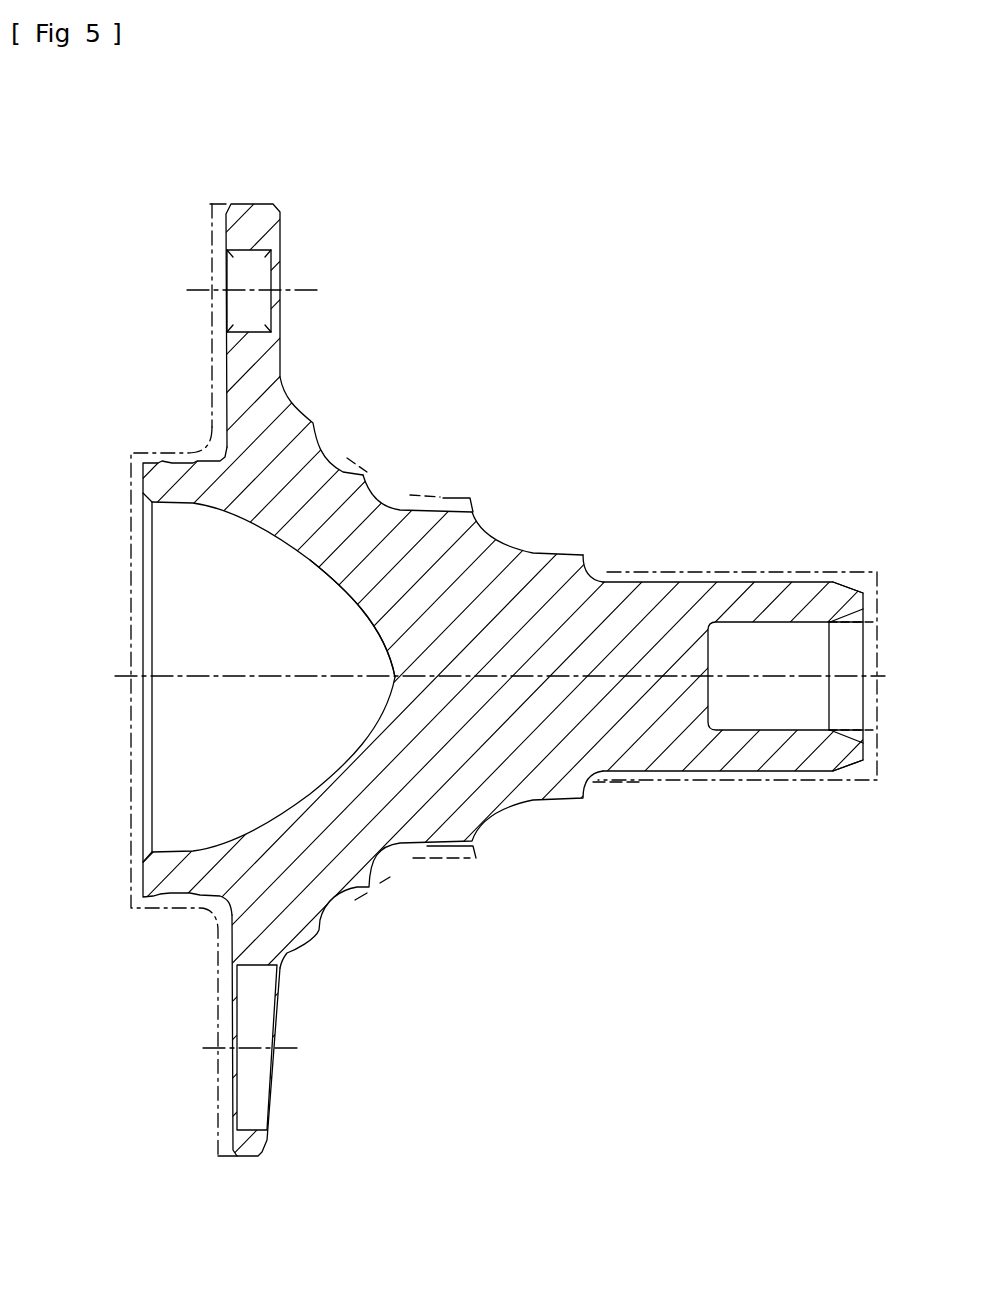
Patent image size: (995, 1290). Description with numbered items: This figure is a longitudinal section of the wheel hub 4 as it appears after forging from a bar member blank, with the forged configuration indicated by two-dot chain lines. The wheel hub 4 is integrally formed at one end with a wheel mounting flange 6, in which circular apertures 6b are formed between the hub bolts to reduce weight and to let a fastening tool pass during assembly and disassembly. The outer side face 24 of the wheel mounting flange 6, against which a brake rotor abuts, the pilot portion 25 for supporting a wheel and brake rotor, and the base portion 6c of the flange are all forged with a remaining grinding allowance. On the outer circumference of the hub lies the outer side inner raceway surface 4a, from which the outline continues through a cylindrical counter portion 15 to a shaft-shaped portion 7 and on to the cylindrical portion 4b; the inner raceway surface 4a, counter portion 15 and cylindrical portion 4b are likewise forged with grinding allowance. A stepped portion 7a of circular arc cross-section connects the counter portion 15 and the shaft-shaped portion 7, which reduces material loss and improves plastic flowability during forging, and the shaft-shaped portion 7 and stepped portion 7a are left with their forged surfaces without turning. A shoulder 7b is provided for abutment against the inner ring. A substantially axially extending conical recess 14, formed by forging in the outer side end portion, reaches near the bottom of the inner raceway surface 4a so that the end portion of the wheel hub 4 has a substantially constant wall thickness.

The wheel hub 4 is at (323, 543).
The inner raceway surface 4a is at (372, 505).
The cylindrical portion 4b is at (700, 580).
The wheel mounting flange 6 is at (249, 213).
The circular apertures 6b is at (258, 967).
The base portion 6c is at (320, 438).
The shaft-shaped portion 7 is at (552, 540).
The stepped portion 7a is at (492, 533).
The shoulder 7b is at (596, 585).
The conical recess 14 is at (382, 722).
The counter portion 15 is at (420, 512).
The outer side face 24 is at (218, 262).
The pilot portion 25 is at (172, 463).